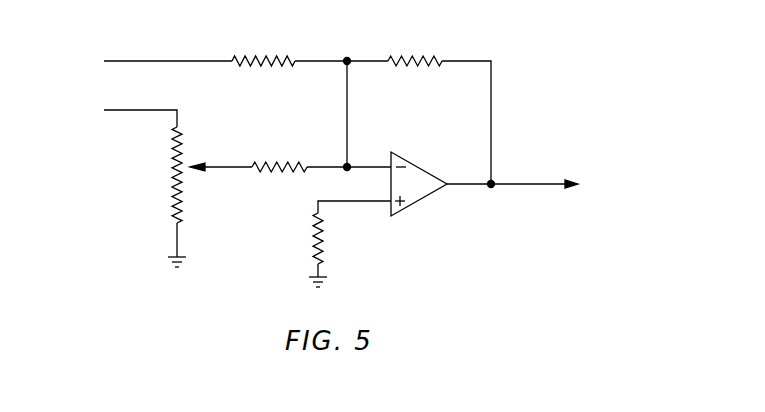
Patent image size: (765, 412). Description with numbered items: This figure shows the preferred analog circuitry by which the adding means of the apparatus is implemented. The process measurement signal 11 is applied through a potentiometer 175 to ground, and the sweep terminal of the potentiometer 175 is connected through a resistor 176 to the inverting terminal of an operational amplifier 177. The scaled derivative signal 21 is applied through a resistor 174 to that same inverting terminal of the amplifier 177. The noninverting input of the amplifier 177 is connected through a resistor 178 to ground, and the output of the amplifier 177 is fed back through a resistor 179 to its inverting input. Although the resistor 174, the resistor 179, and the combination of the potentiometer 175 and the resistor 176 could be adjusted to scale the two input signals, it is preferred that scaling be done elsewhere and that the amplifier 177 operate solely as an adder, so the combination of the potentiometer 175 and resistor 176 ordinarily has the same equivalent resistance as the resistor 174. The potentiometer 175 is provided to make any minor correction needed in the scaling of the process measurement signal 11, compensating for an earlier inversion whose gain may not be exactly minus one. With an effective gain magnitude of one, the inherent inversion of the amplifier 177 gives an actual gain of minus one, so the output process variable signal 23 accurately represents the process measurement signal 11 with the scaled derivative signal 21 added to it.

The scaled derivative signal 21 is at (157, 61).
The process measurement signal 11 is at (155, 110).
The resistor 174 is at (260, 57).
The resistor 179 is at (401, 57).
The resistor 176 is at (276, 163).
The potentiometer 175 is at (172, 166).
The resistor 178 is at (314, 243).
The operational amplifier 177 is at (414, 162).
The process variable signal 23 is at (505, 183).